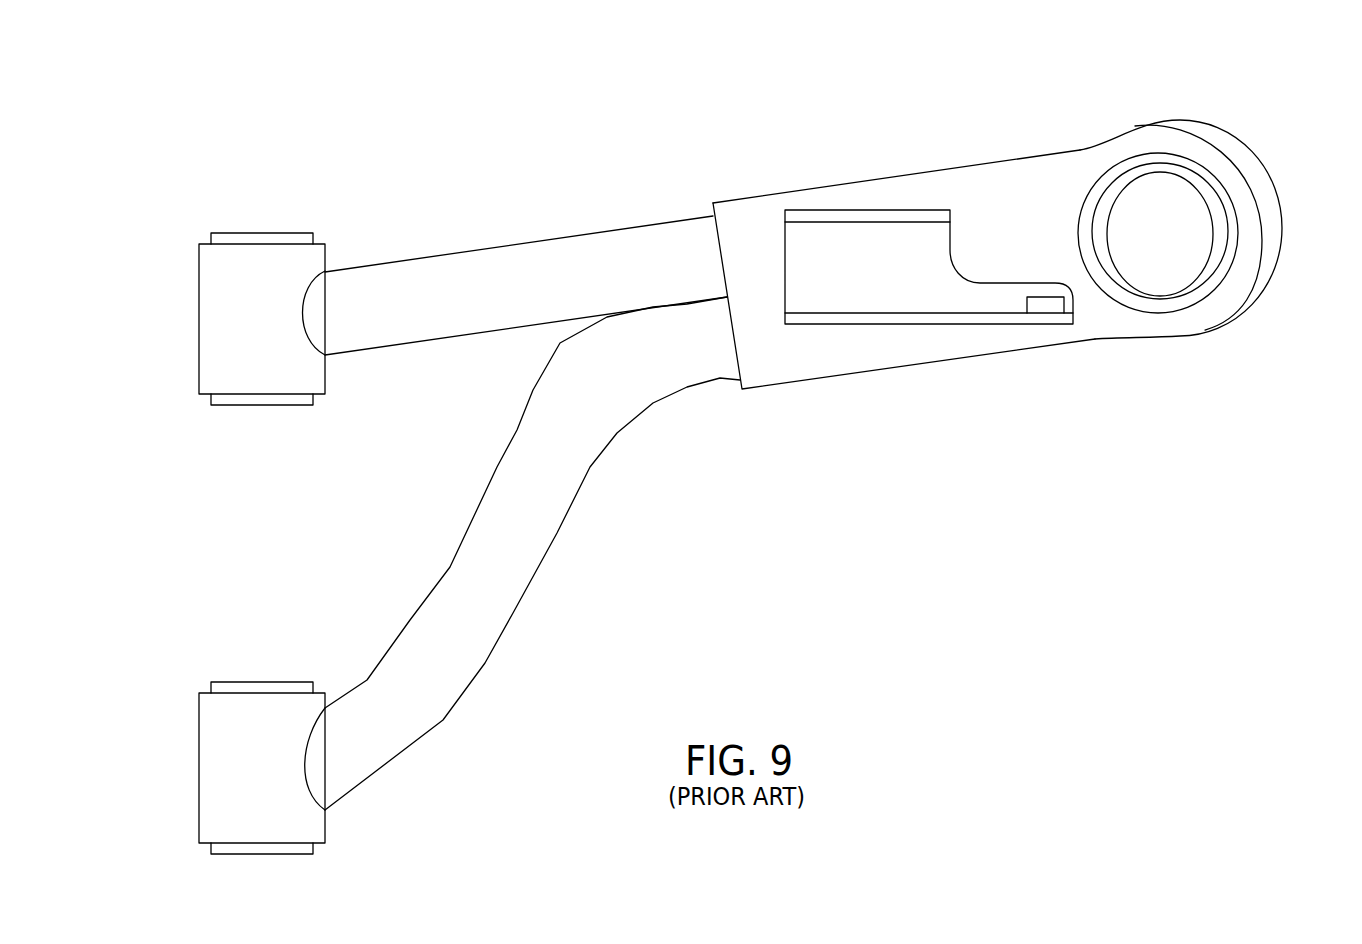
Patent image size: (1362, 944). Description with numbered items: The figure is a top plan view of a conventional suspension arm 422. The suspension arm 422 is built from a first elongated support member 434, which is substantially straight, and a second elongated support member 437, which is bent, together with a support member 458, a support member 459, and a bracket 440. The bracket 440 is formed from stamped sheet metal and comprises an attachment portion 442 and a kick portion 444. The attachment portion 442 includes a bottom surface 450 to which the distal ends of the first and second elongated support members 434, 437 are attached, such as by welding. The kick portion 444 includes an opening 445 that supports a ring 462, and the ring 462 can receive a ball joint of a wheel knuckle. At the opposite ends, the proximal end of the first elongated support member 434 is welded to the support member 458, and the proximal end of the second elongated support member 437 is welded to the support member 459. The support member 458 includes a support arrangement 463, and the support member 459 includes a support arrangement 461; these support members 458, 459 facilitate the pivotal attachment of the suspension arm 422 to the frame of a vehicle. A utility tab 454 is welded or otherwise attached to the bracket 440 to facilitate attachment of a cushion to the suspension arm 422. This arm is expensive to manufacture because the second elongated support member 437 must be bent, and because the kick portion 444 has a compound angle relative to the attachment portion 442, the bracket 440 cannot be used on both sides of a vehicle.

The suspension arm 422 is at (784, 415).
The first elongated support member 434 is at (512, 213).
The second elongated support member 437 is at (406, 566).
The bracket 440 is at (1060, 179).
The attachment portion 442 is at (788, 168).
The kick portion 444 is at (1110, 112).
The opening 445 is at (1206, 174).
The bottom surface 450 is at (875, 231).
The utility tab 454 is at (891, 233).
The support member 458 is at (226, 344).
The support member 459 is at (226, 791).
The support arrangement 461 is at (228, 853).
The ring 462 is at (1217, 210).
The support arrangement 463 is at (237, 404).